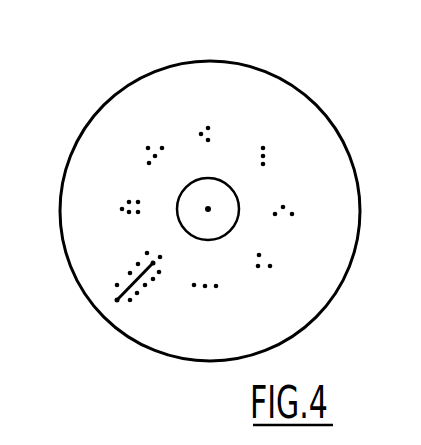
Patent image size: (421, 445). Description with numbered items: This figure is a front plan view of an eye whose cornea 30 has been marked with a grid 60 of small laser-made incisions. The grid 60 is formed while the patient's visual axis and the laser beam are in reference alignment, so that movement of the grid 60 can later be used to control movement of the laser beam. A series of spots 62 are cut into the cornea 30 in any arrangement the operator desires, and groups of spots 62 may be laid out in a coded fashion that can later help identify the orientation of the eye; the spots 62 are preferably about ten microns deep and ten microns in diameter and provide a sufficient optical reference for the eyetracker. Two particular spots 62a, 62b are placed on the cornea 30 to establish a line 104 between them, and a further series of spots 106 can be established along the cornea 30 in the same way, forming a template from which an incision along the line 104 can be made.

The cornea 30 is at (208, 79).
The grid 60 is at (313, 90).
The spots 62 is at (205, 207).
The spot 62a is at (151, 262).
The spot 62b is at (115, 300).
The line 104 is at (134, 283).
The series of spots 106 is at (133, 305).